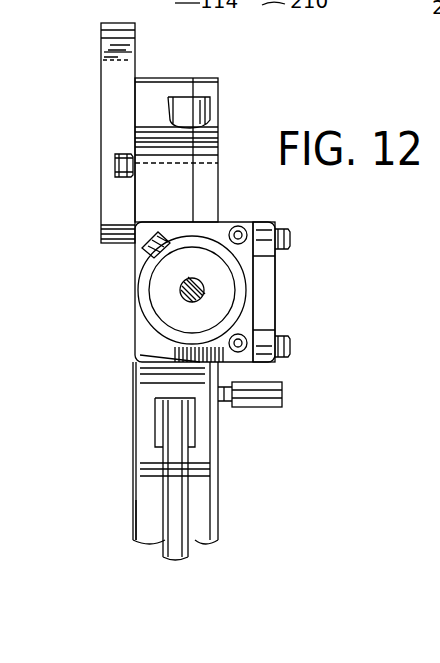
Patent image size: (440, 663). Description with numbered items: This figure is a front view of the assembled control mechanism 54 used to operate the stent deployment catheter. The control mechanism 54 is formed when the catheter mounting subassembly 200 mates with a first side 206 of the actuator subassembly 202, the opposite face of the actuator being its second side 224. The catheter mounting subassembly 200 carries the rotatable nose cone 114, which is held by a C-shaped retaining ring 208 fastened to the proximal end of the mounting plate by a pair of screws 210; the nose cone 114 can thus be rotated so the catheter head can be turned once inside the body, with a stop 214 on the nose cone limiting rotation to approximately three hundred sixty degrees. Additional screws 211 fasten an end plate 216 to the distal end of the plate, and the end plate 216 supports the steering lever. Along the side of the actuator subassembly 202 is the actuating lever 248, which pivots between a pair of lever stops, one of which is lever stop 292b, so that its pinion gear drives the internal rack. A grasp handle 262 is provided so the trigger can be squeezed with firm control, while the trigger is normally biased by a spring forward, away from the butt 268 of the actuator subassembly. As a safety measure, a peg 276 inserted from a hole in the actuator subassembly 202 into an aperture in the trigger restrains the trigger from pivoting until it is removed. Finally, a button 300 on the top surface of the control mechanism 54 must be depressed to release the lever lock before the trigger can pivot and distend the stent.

The control mechanism 54 is at (100, 97).
The actuating lever 248 is at (113, 50).
The second side of actuator subassembly 224 is at (150, 200).
The lever stop 292b is at (115, 163).
The first side of actuator subassembly 206 is at (212, 87).
The button 300 is at (212, 108).
The catheter mounting subassembly 200 is at (286, 277).
The end plate 216 is at (262, 297).
The nose cone 114 is at (222, 307).
The screws 210 is at (247, 223).
The additional screws 211 is at (291, 242).
The stop 214 is at (142, 248).
The C-shaped retaining ring 208 is at (153, 343).
The actuator subassembly 202 is at (133, 421).
The grasp handle 262 is at (175, 512).
The butt 268 is at (143, 518).
The peg 276 is at (262, 408).